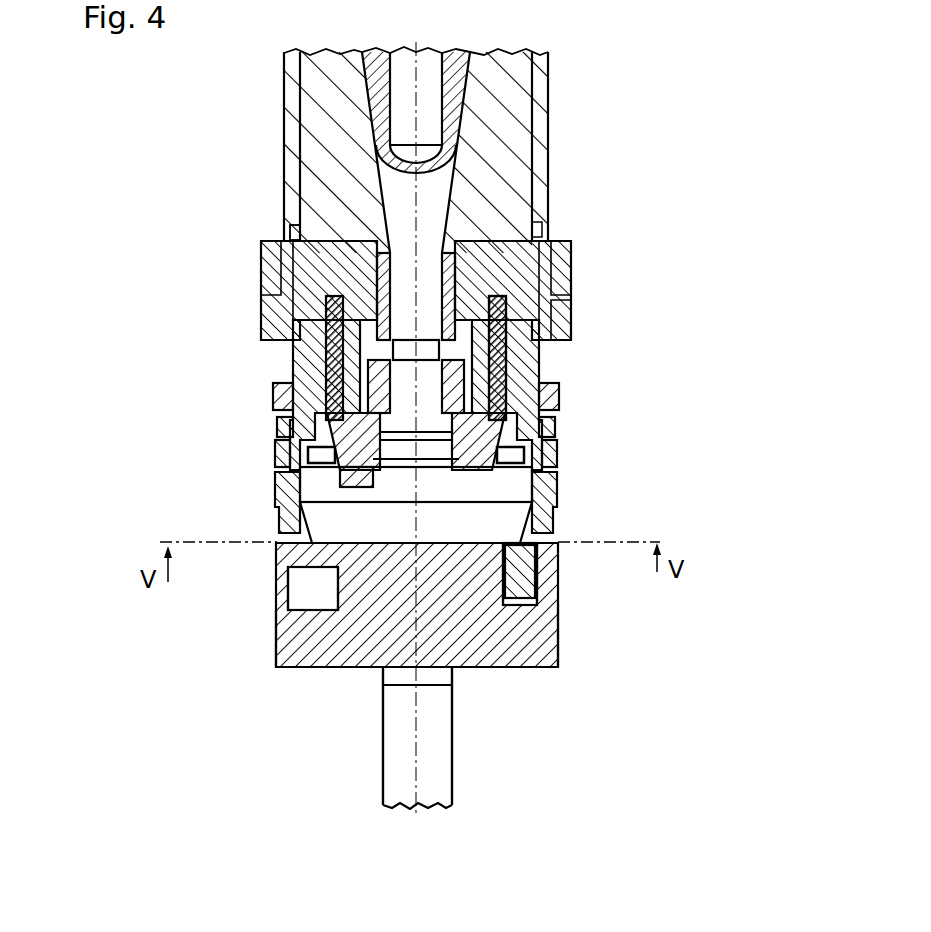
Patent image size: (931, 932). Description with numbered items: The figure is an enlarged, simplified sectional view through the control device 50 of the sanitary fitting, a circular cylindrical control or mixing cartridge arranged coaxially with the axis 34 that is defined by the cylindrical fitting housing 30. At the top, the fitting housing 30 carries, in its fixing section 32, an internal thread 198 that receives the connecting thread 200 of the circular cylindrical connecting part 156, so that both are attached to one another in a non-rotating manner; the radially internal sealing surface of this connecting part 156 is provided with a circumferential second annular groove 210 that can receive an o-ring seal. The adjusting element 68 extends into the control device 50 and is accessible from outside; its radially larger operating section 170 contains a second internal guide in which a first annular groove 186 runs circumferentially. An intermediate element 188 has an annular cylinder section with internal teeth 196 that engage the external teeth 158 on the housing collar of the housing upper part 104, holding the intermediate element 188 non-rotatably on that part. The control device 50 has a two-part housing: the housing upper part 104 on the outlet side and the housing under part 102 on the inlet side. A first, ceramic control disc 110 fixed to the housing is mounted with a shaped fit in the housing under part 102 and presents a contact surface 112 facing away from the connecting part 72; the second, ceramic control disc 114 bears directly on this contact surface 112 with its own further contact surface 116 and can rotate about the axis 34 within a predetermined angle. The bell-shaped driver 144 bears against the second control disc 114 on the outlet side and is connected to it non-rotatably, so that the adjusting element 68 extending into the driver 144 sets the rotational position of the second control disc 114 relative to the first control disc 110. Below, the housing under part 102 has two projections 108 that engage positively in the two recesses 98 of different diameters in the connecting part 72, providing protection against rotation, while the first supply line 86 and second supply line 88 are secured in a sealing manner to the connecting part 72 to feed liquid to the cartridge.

The fitting housing 30 is at (549, 118).
The fixing section 32 is at (275, 227).
The axis 34 is at (418, 83).
The second annular groove 210 is at (500, 232).
The connecting part 156 is at (549, 232).
The adjusting element 68 is at (577, 262).
The intermediate element 188 is at (576, 296).
The internal thread 198 is at (284, 233).
The connecting thread 200 is at (295, 232).
The first annular groove 186 is at (262, 268).
The operating section 170 is at (262, 325).
The external teeth 158 is at (500, 352).
The internal teeth 196 is at (497, 358).
The housing upper part 104 is at (559, 393).
The further contact surface 116 is at (330, 507).
The driver 144 is at (556, 424).
The control device 50 is at (262, 440).
The second control disc 114 is at (512, 483).
The contact surface 112 is at (378, 505).
The housing under part 102 is at (558, 512).
The first control disc 110 is at (558, 577).
The projections 108 is at (313, 595).
The recesses 98 is at (272, 645).
The connecting part 72 is at (508, 660).
The first supply line 86 is at (442, 762).
The second supply line 88 is at (417, 736).